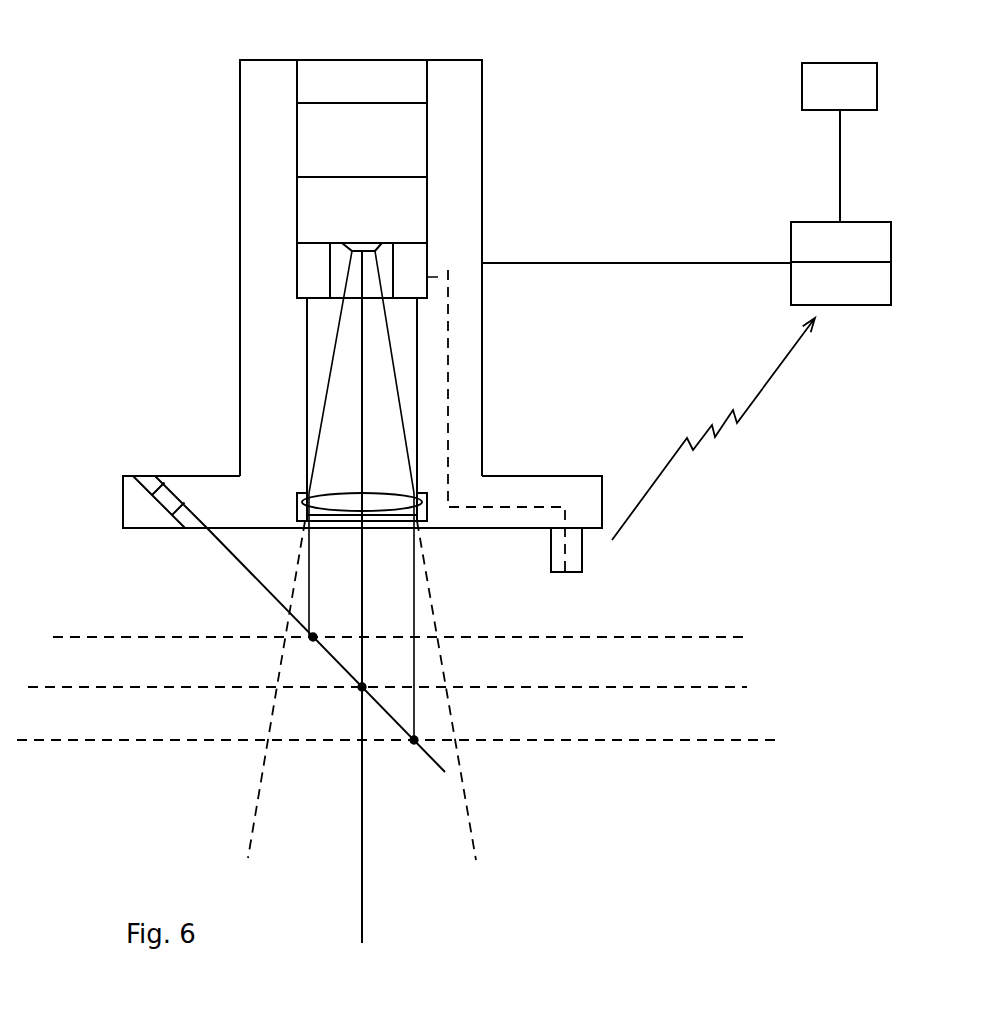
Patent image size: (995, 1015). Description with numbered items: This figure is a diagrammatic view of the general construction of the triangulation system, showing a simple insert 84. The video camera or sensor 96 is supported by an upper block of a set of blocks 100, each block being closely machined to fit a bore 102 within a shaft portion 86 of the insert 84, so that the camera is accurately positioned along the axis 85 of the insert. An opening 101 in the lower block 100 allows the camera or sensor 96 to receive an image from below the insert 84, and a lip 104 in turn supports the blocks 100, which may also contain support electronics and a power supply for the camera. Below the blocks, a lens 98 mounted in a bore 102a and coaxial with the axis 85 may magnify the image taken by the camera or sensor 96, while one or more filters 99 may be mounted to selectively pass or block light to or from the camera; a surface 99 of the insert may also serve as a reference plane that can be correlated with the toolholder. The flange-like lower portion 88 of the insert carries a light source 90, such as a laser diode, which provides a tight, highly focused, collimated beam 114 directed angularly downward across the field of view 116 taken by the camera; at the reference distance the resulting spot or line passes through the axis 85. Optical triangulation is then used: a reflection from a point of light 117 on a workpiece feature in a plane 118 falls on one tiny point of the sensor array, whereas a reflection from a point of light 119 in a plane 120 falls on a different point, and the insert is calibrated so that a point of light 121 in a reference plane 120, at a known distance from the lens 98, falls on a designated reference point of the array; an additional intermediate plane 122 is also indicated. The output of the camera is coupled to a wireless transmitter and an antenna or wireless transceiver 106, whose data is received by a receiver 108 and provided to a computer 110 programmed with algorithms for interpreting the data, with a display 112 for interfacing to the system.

The insert 84 is at (367, 294).
The axis 85 is at (362, 846).
The shaft portion 86 is at (482, 94).
The mounting flange 88 is at (537, 476).
The light source 90 is at (163, 516).
The video camera or sensor 96 is at (345, 247).
The lens 98 is at (378, 512).
The filter 99 is at (378, 527).
The blocks 100 is at (317, 268).
The opening 101 is at (390, 284).
The bore 102 is at (366, 162).
The bore 102a is at (308, 414).
The lip 104 is at (300, 302).
The antenna or wireless transceiver 106 is at (599, 557).
The receiver 108 is at (885, 306).
The computer 110 is at (809, 222).
The display 112 is at (818, 62).
The collimated beam 114 is at (268, 592).
The field of view 116 is at (445, 657).
The point of light 117 is at (309, 644).
The plane 118 is at (543, 636).
The point of light 119 is at (413, 744).
The plane 120 is at (594, 742).
The point of light 121 is at (354, 692).
The second focal plane 122 is at (594, 686).